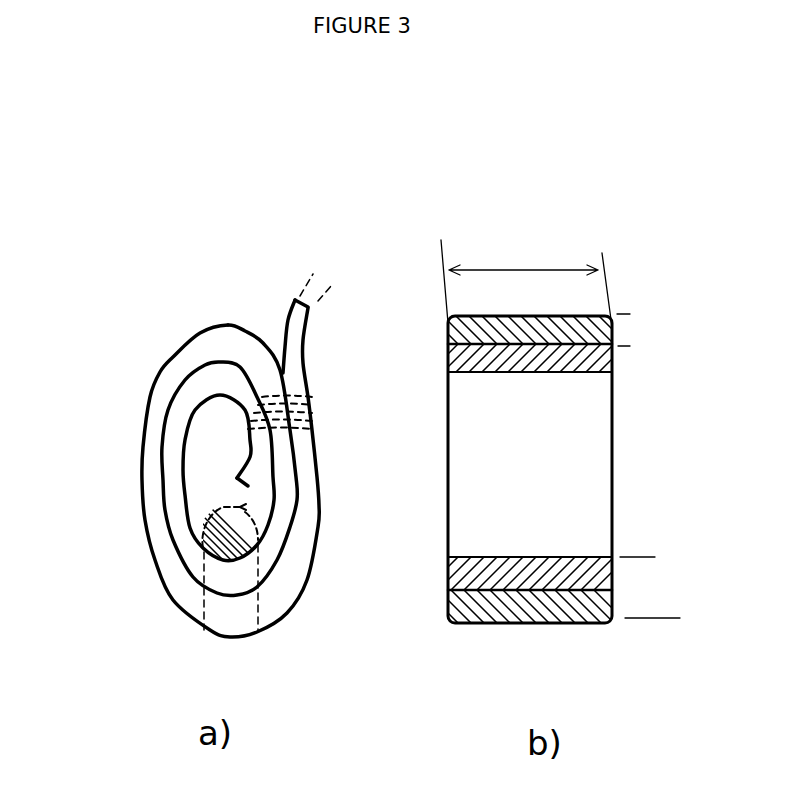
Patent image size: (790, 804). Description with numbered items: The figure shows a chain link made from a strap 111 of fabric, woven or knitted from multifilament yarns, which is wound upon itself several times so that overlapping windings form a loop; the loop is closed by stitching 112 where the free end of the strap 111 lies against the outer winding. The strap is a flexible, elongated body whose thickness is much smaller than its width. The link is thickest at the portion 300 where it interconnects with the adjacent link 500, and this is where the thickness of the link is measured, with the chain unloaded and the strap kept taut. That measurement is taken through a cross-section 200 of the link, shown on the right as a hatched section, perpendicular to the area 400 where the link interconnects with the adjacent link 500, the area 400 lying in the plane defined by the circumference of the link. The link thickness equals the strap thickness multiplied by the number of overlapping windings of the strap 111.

The strap 111 is at (212, 447).
The stitching 112 is at (312, 388).
The adjacent link 500 is at (223, 510).
The area where the link interconnects with the adjacent link 400 is at (230, 560).
The portion where the link interconnects with the adjacent link 300 is at (253, 607).
The cross-section of the link 200 is at (493, 607).